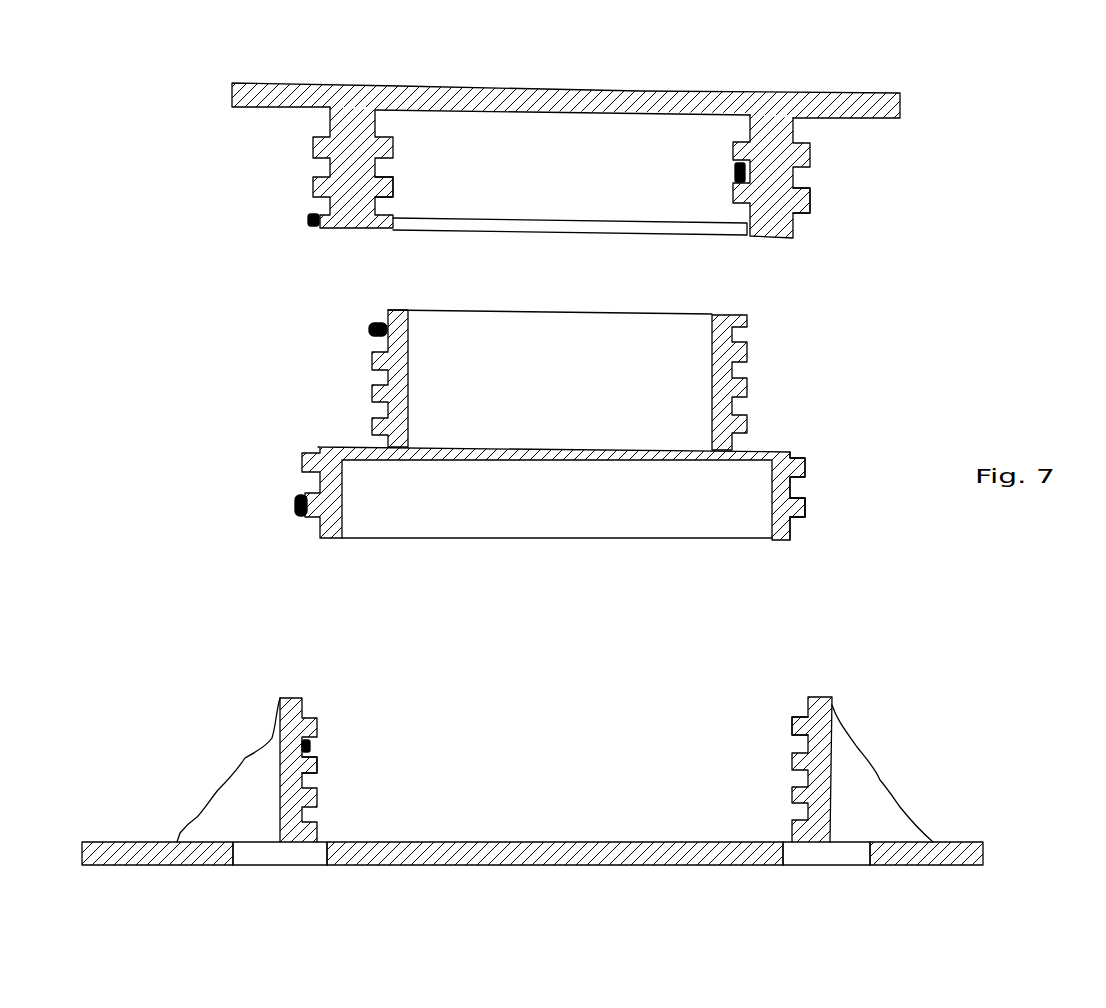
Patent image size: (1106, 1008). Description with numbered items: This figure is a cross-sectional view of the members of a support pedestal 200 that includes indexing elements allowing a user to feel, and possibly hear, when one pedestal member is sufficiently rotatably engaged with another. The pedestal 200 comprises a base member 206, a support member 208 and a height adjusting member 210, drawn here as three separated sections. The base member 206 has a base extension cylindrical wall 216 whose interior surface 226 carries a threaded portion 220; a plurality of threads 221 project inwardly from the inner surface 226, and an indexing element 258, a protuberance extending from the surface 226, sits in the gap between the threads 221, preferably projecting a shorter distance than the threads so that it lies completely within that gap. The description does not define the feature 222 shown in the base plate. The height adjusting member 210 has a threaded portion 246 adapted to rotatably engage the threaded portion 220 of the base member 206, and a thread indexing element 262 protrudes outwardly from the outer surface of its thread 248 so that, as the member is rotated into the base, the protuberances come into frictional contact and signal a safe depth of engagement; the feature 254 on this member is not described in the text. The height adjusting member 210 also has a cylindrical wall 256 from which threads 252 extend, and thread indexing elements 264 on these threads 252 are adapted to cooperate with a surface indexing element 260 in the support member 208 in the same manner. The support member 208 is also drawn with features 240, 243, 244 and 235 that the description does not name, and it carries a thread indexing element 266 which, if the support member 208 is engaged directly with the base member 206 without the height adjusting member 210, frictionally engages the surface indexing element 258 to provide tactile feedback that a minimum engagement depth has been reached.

The support pedestal 200 is at (654, 147).
The support member 208 is at (905, 90).
The left connector post 240 is at (377, 120).
The engagement tooth 243 is at (394, 188).
The thread indexing element 266 is at (307, 222).
The right connector post 244 is at (795, 130).
The engagement tooth 235 is at (809, 200).
The surface indexing element 260 is at (735, 173).
The height adjusting member 210 is at (513, 421).
The cylindrical wall 256 is at (372, 378).
The thread indexing elements 264 is at (368, 330).
The threads 252 is at (750, 351).
The threaded portion 246 is at (220, 547).
The right base wall 254 is at (808, 483).
The thread 248 is at (806, 507).
The thread indexing element 262 is at (298, 508).
The opening in base plate 222 is at (292, 867).
The threaded portion 220 is at (390, 835).
The indexing element 258 is at (312, 745).
The interior surface 226 is at (313, 777).
The base extension cylindrical wall 216 is at (818, 697).
The threads 221 is at (790, 727).
The base member 206 is at (893, 782).